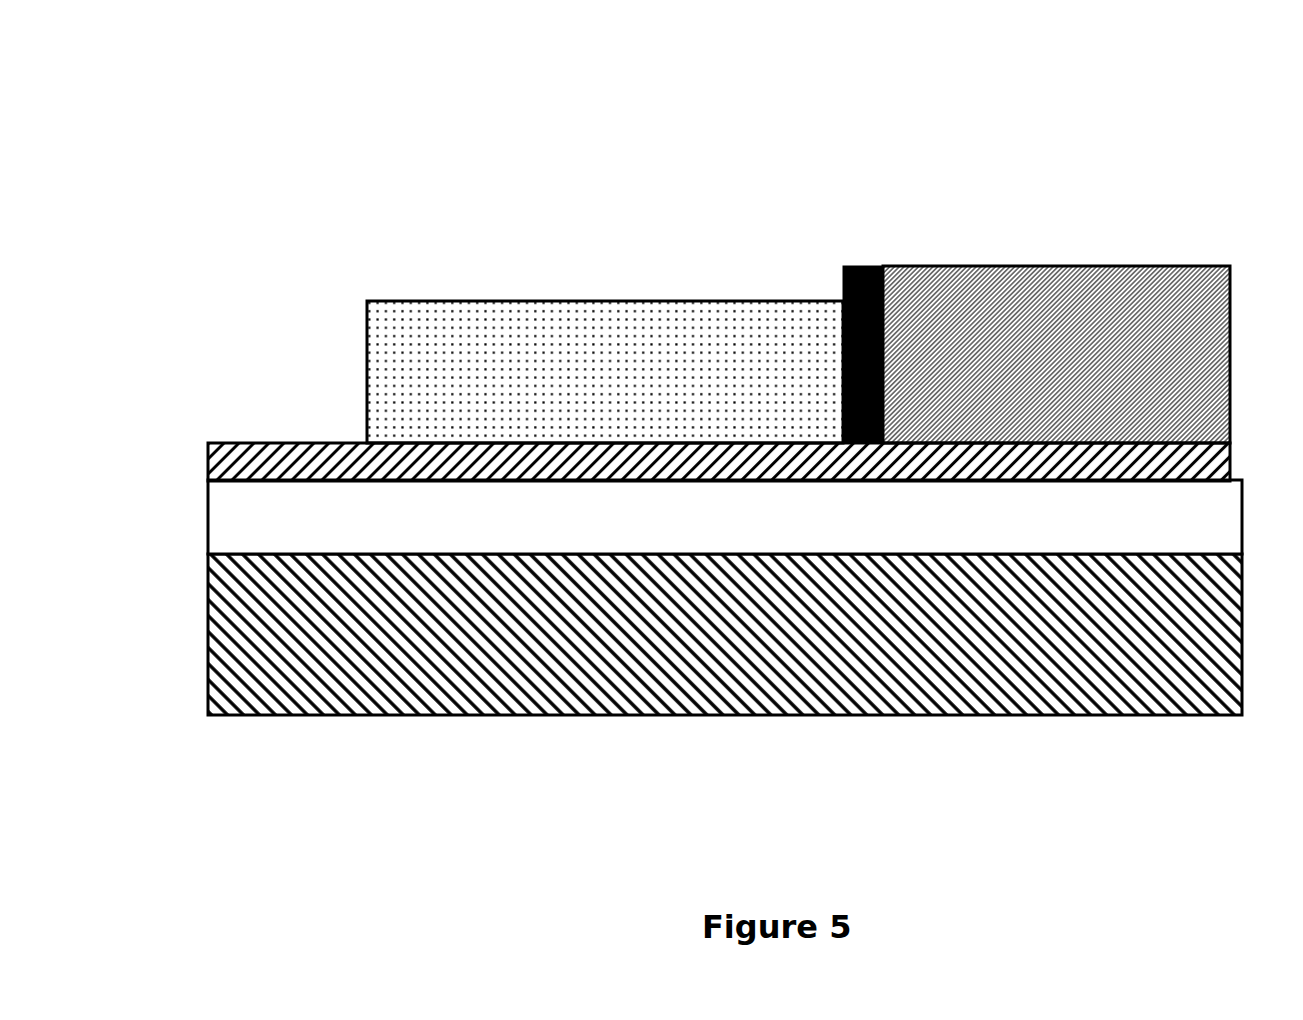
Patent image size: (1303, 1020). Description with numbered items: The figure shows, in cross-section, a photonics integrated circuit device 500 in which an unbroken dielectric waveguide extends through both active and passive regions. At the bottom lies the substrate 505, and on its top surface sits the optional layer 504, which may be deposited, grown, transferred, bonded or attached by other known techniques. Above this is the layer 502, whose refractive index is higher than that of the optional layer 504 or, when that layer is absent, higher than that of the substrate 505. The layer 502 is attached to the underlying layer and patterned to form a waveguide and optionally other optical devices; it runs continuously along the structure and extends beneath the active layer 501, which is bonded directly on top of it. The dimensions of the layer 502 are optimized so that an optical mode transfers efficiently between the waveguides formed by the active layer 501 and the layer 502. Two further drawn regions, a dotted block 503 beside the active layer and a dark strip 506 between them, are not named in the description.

The photonics integrated circuit device 500 is at (408, 100).
The active layer 501 is at (1185, 288).
The layer 502 is at (277, 457).
The active layer 503 is at (555, 360).
The optional layer 504 is at (230, 515).
The substrate 505 is at (230, 625).
The contact layer 506 is at (843, 280).